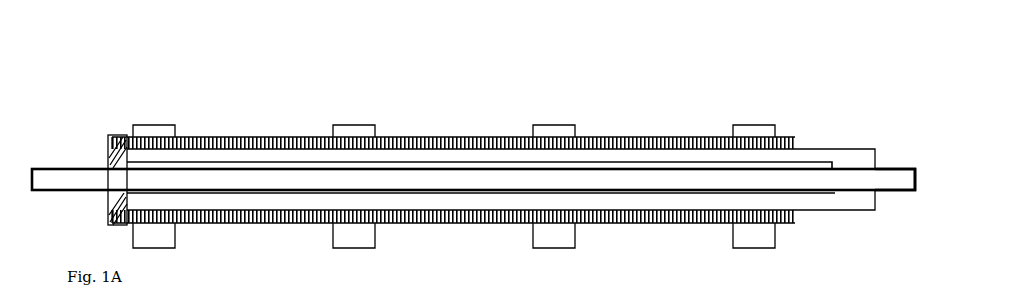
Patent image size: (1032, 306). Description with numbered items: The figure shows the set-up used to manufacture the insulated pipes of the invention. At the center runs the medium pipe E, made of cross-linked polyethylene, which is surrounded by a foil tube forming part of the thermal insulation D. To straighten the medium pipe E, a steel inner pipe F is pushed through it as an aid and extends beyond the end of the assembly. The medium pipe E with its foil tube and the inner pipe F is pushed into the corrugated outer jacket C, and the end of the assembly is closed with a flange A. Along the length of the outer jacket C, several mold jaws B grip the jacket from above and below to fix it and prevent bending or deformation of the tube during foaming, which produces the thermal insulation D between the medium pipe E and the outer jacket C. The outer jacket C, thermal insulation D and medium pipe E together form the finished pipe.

The flange A is at (110, 137).
The mold jaw B is at (160, 124).
The corrugated outer jacket C is at (793, 136).
The thermal insulation with foil D is at (813, 148).
The medium pipe E is at (830, 167).
The inner pipe F is at (890, 167).